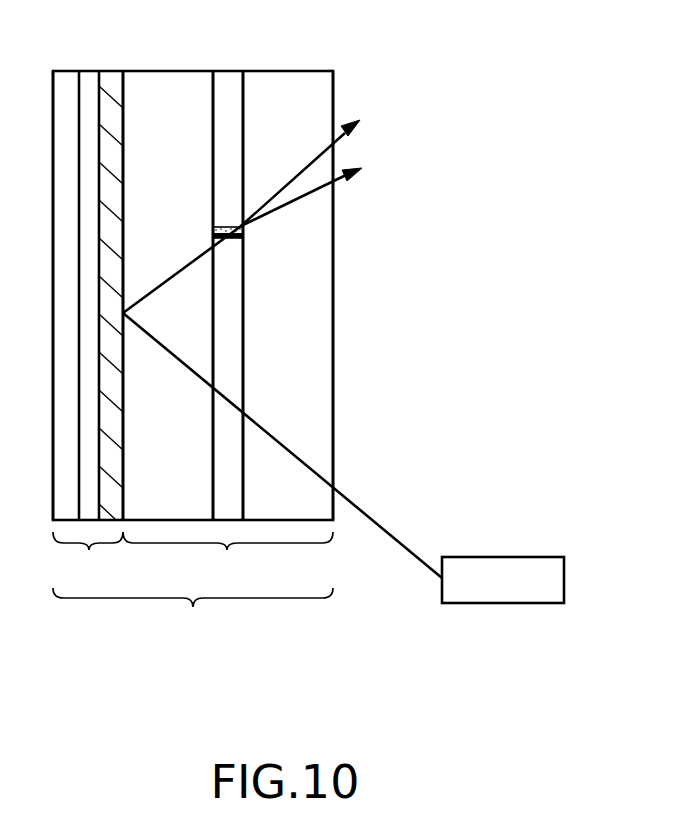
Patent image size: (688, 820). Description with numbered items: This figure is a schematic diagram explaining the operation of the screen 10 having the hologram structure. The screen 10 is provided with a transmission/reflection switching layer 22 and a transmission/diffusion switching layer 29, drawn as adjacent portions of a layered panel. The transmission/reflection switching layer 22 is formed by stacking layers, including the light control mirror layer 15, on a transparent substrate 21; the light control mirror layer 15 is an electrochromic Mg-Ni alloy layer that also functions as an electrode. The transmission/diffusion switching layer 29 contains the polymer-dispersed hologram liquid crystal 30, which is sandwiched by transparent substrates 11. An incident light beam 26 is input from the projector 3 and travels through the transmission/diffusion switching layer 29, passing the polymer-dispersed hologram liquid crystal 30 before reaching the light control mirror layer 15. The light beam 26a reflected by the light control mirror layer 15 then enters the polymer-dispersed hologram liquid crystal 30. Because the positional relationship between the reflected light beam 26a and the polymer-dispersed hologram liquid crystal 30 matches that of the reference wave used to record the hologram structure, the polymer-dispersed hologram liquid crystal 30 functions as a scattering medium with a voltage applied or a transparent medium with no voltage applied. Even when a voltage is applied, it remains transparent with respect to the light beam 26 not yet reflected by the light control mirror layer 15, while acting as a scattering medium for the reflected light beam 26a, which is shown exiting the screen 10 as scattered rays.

The screen 10 is at (193, 357).
The transparent substrate 21 is at (64, 82).
The light control mirror layer 15 is at (110, 82).
The transparent substrate 11 is at (172, 82).
The polymer-dispersed hologram liquid crystal 30 is at (227, 82).
The transmission/reflection switching layer 22 is at (88, 560).
The transmission/diffusion switching layer 29 is at (228, 560).
The incident light beam 26 is at (390, 533).
The reflected light beam 26a is at (163, 278).
The projector 3 is at (522, 567).